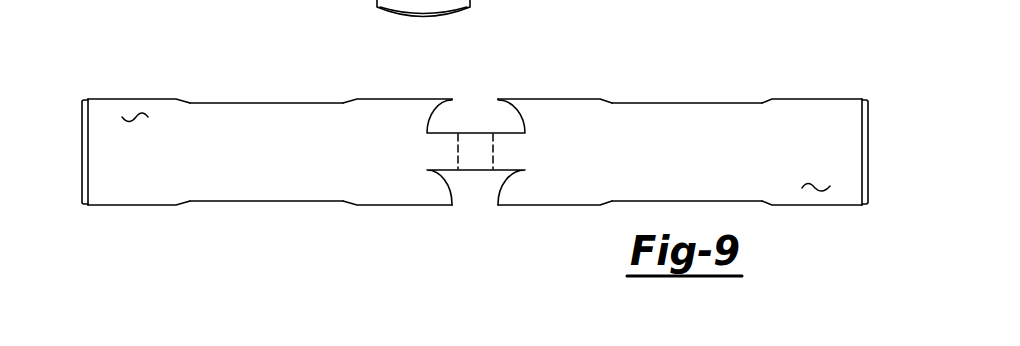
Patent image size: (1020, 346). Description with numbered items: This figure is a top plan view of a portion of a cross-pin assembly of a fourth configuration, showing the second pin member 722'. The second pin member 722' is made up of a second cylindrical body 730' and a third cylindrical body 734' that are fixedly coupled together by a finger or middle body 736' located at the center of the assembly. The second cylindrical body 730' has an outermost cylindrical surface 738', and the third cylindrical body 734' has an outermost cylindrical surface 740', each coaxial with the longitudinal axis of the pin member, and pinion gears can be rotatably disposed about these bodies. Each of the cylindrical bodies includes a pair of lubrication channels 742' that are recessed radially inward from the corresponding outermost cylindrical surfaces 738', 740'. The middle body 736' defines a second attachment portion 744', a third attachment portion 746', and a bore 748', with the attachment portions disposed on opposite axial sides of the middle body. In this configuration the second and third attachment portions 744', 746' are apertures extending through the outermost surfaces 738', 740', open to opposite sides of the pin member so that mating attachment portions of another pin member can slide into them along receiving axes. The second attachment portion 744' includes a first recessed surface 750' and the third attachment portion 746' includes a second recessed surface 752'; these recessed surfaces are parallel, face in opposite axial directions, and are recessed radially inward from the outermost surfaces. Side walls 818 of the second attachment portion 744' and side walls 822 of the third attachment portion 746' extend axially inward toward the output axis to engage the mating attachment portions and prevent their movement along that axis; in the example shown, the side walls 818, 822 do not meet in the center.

The second pin member 722' is at (67, 190).
The second cylindrical body 730' is at (270, 185).
The third cylindrical body 734' is at (683, 119).
The middle body 736' is at (555, 164).
The outermost cylindrical surface 738' is at (109, 64).
The outermost cylindrical surface 740' is at (843, 241).
The lubrication channel 742' is at (476, 168).
The second attachment portion 744' is at (476, 229).
The third attachment portion 746' is at (481, 81).
The bore 748' is at (423, 148).
The first recessed surface 750' is at (389, 177).
The second recessed surface 752' is at (572, 131).
The side walls 818 is at (440, 193).
The side walls 822 is at (438, 116).